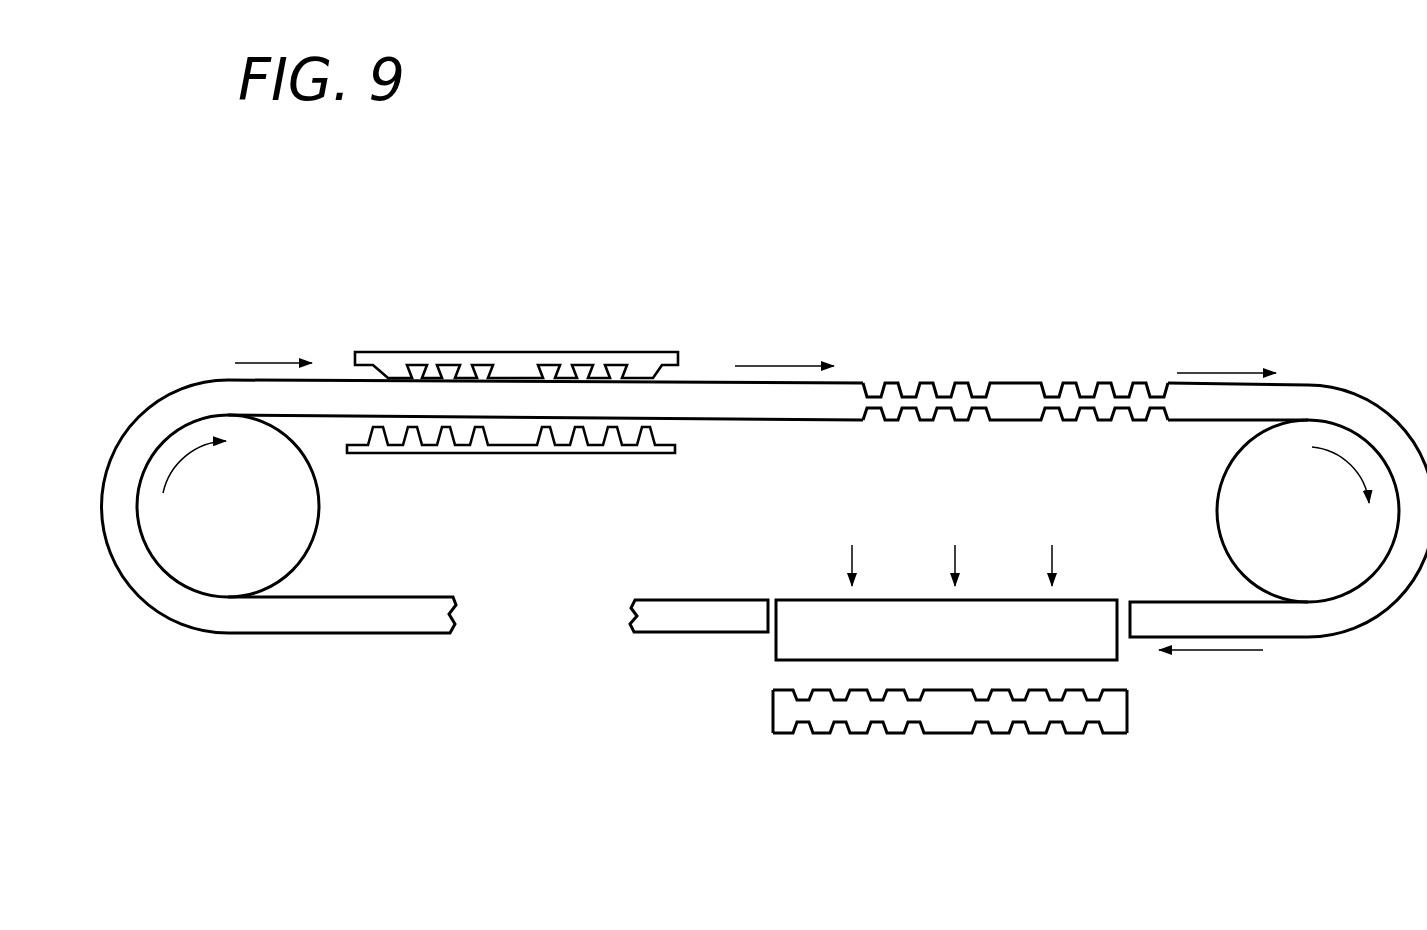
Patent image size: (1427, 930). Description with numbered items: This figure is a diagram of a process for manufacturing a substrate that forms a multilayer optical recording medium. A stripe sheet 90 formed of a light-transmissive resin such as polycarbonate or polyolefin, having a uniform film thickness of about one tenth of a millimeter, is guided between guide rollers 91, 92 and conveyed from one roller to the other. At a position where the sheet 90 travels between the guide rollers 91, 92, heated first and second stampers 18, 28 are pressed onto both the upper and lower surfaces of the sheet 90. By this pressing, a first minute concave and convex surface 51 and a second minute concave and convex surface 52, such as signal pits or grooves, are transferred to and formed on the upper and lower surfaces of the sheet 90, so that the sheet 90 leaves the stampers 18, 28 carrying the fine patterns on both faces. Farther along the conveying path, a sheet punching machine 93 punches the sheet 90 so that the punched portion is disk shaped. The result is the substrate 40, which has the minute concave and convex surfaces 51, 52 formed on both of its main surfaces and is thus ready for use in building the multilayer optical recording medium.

The first stamper 18 is at (493, 453).
The second stamper 28 is at (427, 352).
The substrate 40 is at (963, 722).
The first minute concave and convex surface 51 is at (1085, 421).
The second minute concave and convex surface 52 is at (1117, 392).
The sheet 90 is at (353, 627).
The guide roller 91 is at (213, 567).
The guide roller 92 is at (1322, 578).
The sheet punching machine 93 is at (802, 612).